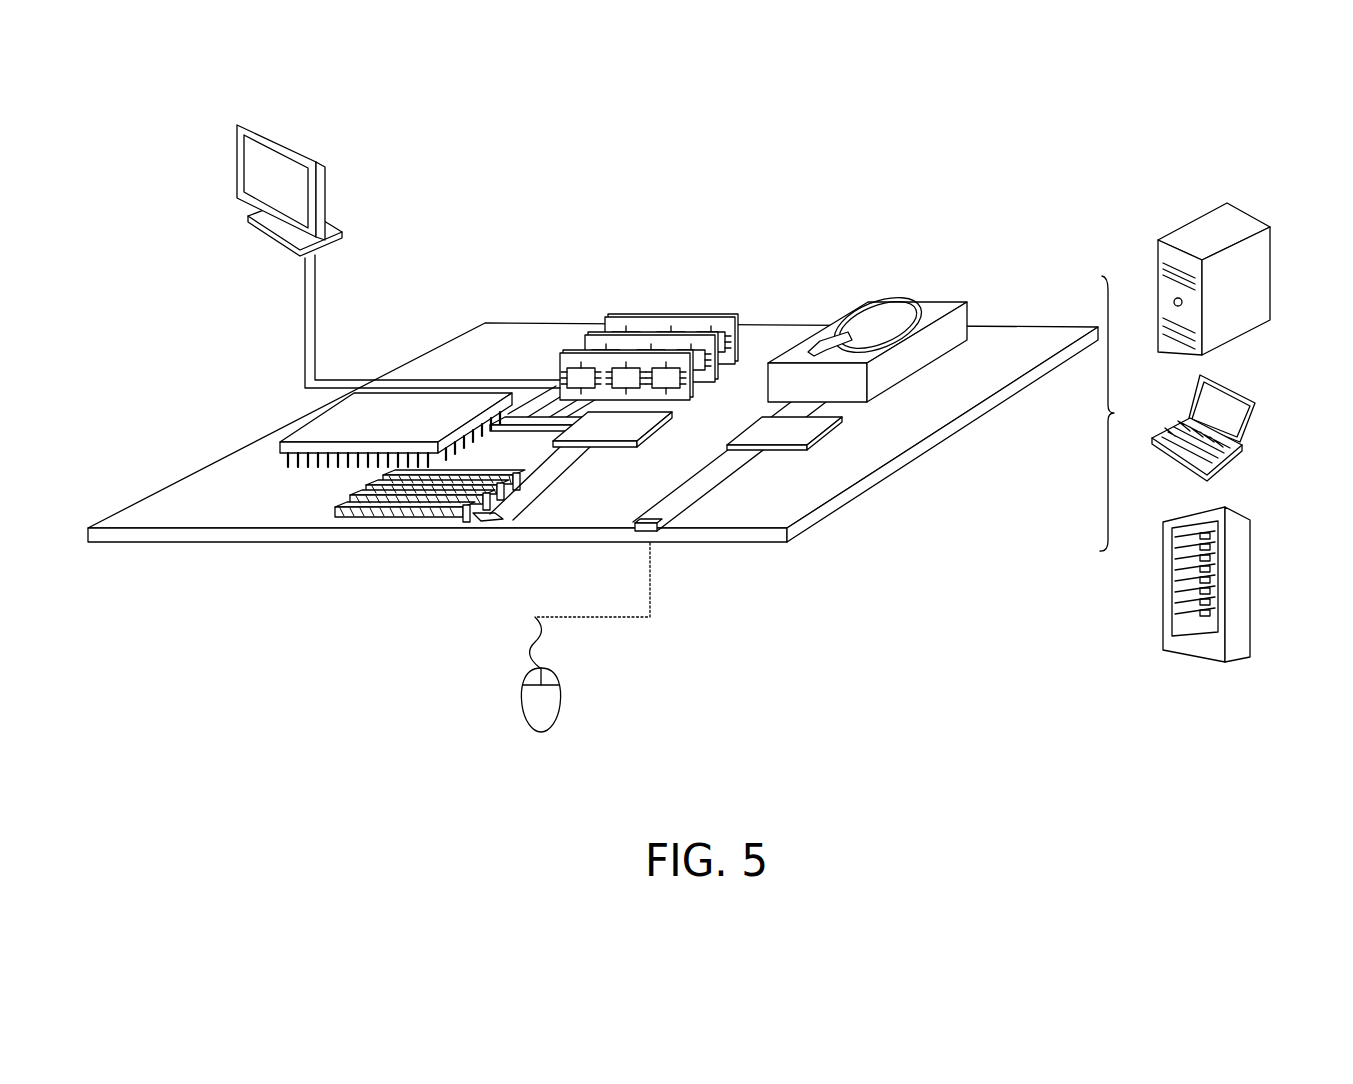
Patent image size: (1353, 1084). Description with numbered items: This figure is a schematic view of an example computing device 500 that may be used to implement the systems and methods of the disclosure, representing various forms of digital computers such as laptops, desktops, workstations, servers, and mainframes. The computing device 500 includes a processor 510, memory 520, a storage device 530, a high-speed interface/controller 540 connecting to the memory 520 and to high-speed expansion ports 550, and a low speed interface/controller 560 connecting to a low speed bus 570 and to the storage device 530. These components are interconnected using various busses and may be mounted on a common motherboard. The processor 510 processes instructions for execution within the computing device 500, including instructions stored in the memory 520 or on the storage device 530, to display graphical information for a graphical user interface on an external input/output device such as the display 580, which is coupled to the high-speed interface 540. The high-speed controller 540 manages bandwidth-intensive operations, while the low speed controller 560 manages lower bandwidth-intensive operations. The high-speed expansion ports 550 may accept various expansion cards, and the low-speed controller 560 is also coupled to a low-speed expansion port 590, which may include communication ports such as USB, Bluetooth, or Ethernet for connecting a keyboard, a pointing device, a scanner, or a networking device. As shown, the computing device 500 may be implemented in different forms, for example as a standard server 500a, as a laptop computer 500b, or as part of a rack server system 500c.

The computing device 500 is at (745, 187).
The standard server 500a is at (1188, 223).
The laptop computer 500b is at (1238, 395).
The rack server system 500c is at (1246, 565).
The processor 510 is at (280, 444).
The memory 520 is at (668, 316).
The storage device 530 is at (909, 302).
The high-speed interface/controller 540 is at (612, 447).
The high-speed expansion ports 550 is at (335, 507).
The low speed interface/controller 560 is at (778, 430).
The low speed bus 570 is at (730, 488).
The display 580 is at (236, 167).
The low-speed expansion port 590 is at (656, 540).